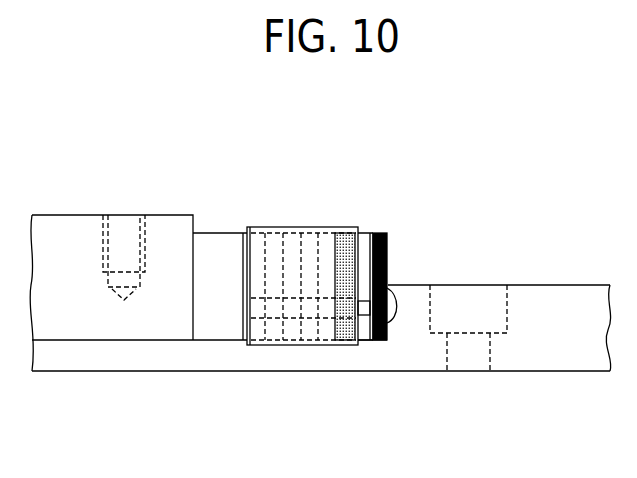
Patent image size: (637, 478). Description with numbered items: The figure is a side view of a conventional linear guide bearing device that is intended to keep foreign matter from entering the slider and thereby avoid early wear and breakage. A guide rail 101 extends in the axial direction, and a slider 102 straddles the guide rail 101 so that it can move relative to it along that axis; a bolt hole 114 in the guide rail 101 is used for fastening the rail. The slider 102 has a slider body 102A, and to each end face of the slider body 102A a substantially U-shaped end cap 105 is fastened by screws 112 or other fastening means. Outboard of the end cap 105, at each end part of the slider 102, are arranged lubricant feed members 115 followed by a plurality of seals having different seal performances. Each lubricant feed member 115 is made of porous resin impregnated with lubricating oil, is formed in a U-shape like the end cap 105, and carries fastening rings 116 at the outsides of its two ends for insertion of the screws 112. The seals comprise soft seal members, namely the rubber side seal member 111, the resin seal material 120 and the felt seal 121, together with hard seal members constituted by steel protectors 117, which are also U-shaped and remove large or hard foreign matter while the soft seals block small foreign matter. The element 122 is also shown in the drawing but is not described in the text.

The guide rail 101 is at (565, 355).
The slider 102 is at (164, 212).
The slider body 102A is at (63, 213).
The end cap 105 is at (218, 232).
The side seal member 111 is at (368, 345).
The screw 112 is at (395, 305).
The bolt hole 114 is at (507, 301).
The lubricant feed member 115 is at (322, 232).
The fastening ring 116 is at (270, 318).
The protector 117 is at (384, 232).
The resin seal material 120 is at (385, 342).
The felt seal 121 is at (345, 342).
The element body 122 is at (254, 226).